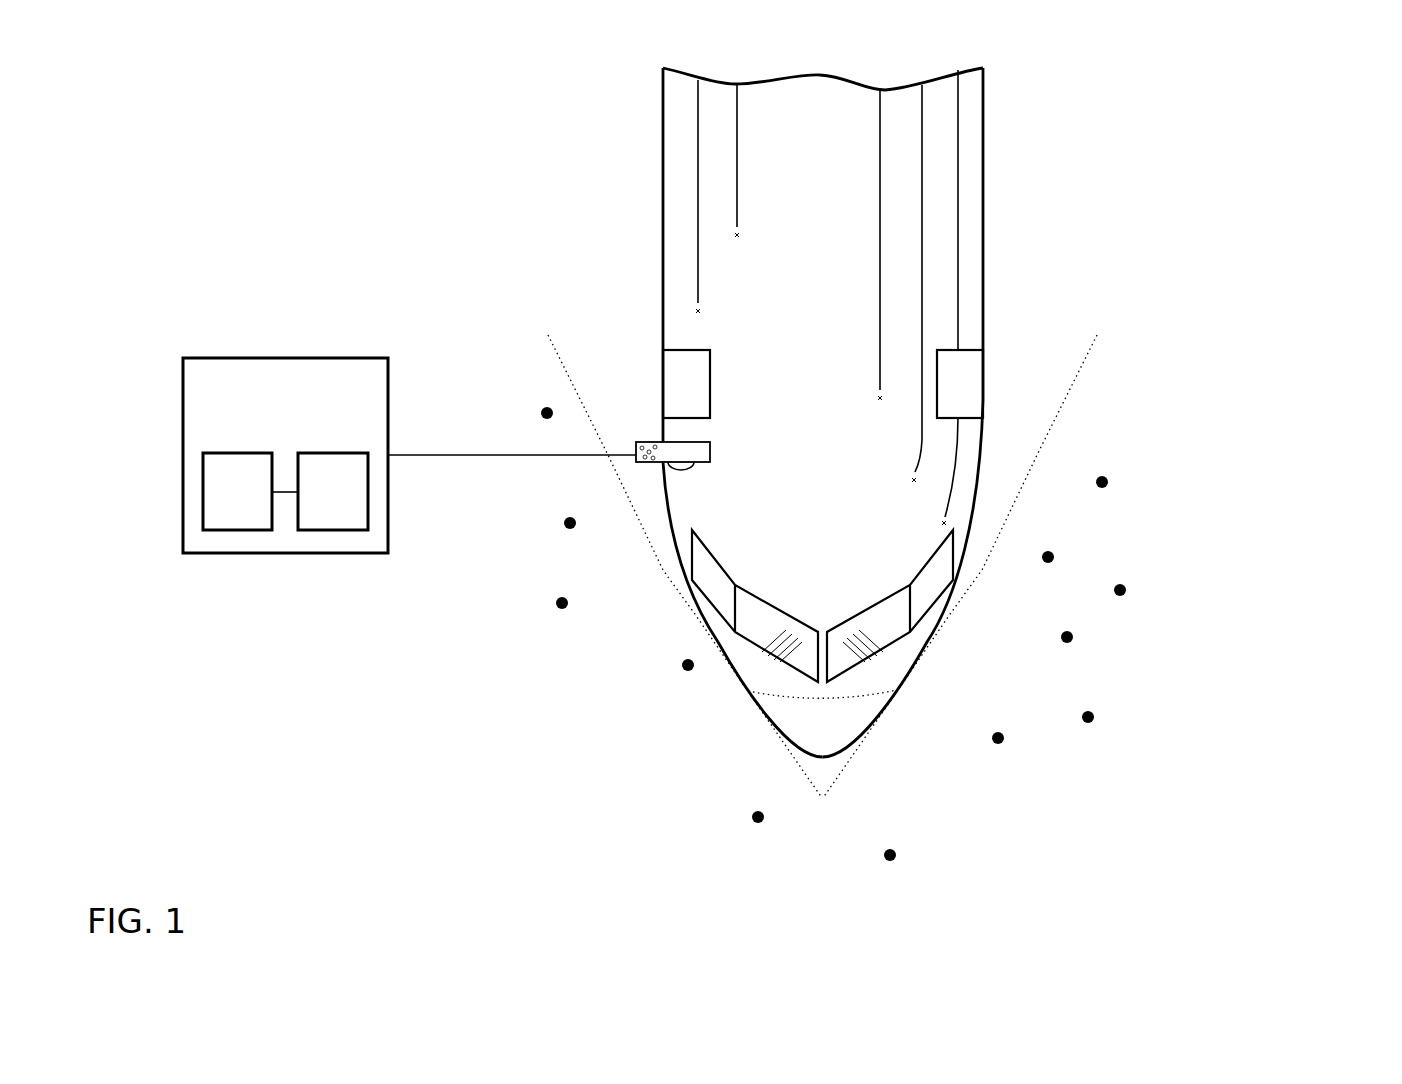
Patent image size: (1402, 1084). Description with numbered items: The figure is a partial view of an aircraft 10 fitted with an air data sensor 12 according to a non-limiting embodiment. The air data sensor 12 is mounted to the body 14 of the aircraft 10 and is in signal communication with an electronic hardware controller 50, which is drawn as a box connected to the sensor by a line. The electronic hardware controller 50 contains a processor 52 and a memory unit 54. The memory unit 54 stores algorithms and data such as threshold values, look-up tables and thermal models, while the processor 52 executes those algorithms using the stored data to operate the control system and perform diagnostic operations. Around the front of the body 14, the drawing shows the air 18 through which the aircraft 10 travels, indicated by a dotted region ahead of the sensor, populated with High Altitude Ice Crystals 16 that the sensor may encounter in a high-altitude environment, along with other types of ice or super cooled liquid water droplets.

The aircraft 10 is at (1262, 263).
The air data sensor 12 is at (690, 463).
The body 14 is at (983, 232).
The High Altitude Ice Crystals 16 is at (557, 606).
The air 18 is at (662, 560).
The electronic hardware controller 50 is at (304, 412).
The processor 52 is at (251, 504).
The memory unit 54 is at (347, 504).